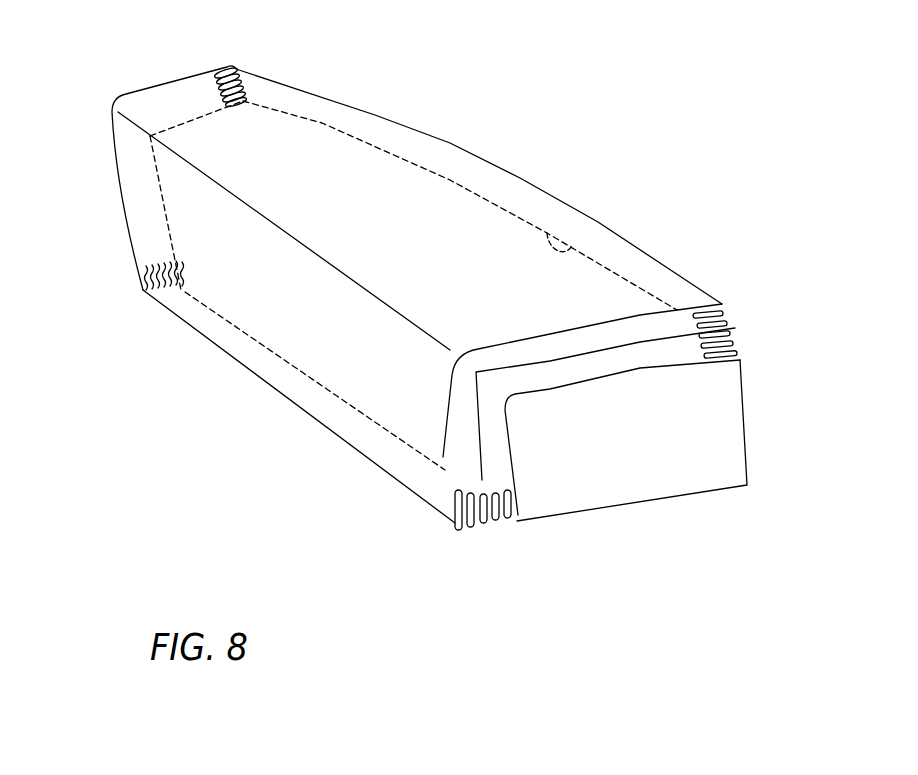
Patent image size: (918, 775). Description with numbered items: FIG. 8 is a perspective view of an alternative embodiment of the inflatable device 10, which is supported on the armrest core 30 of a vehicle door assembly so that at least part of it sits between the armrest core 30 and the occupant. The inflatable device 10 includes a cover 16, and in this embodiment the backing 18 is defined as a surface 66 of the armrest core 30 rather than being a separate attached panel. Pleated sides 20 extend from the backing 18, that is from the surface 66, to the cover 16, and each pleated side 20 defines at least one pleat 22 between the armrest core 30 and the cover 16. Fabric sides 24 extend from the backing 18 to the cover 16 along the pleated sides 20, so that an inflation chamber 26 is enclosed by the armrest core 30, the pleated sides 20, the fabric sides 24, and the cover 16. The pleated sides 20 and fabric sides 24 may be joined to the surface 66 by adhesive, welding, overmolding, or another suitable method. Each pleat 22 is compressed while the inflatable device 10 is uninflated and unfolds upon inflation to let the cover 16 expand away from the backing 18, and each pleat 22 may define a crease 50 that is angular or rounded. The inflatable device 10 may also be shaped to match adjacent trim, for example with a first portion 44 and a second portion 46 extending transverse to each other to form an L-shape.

The inflatable device 10 is at (482, 117).
The cover 16 is at (287, 143).
The backing 18 is at (237, 285).
The surface 66 is at (148, 168).
The pleated side 20 is at (609, 433).
The pleat 22 is at (738, 356).
The fabric side 24 is at (478, 440).
The inflation chamber 26 is at (573, 247).
The armrest core 30 is at (749, 461).
The first portion 44 is at (164, 80).
The second portion 46 is at (111, 193).
The crease 50 is at (693, 314).